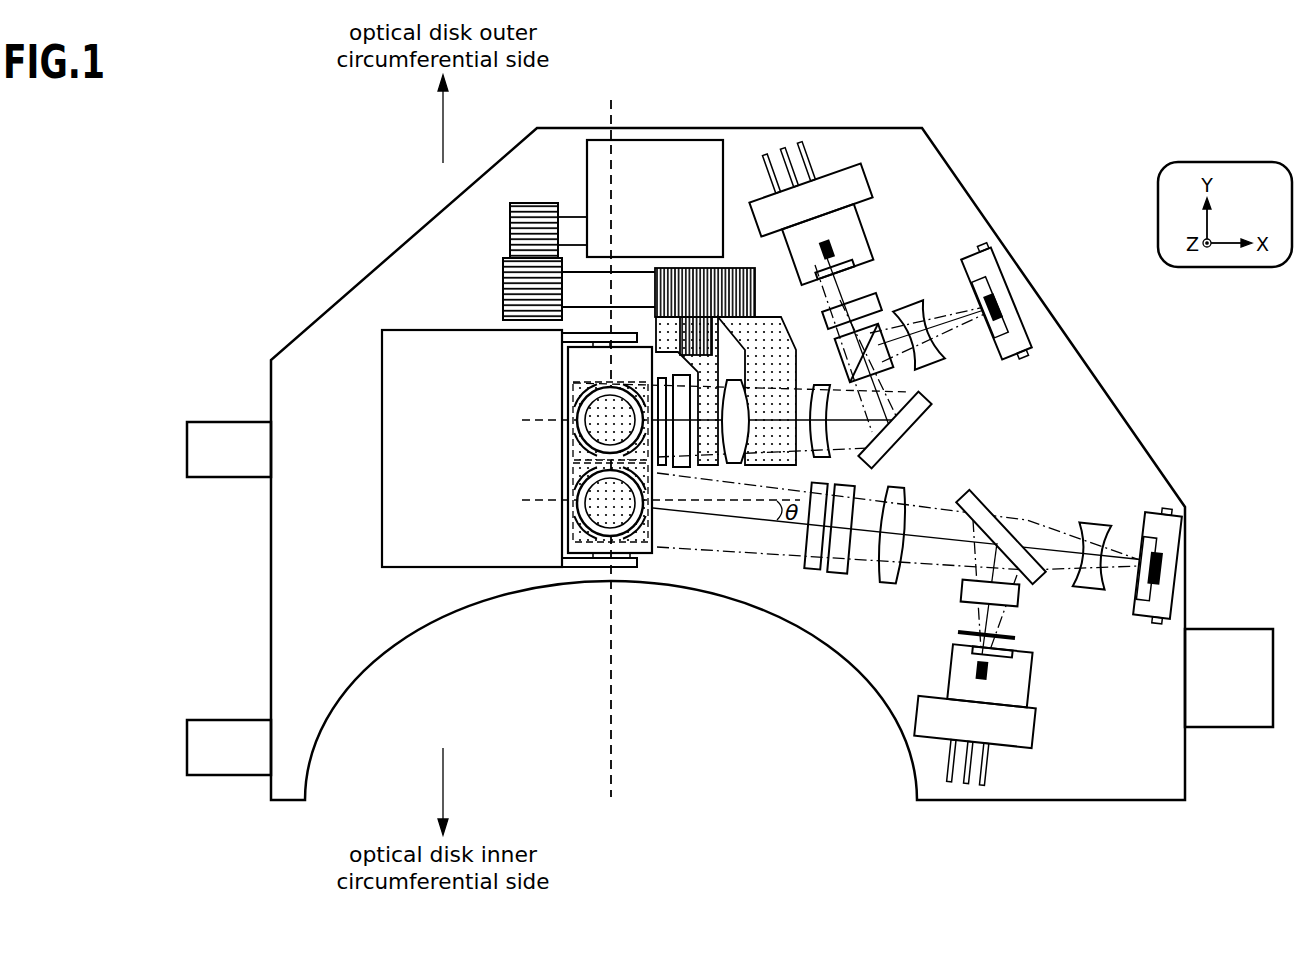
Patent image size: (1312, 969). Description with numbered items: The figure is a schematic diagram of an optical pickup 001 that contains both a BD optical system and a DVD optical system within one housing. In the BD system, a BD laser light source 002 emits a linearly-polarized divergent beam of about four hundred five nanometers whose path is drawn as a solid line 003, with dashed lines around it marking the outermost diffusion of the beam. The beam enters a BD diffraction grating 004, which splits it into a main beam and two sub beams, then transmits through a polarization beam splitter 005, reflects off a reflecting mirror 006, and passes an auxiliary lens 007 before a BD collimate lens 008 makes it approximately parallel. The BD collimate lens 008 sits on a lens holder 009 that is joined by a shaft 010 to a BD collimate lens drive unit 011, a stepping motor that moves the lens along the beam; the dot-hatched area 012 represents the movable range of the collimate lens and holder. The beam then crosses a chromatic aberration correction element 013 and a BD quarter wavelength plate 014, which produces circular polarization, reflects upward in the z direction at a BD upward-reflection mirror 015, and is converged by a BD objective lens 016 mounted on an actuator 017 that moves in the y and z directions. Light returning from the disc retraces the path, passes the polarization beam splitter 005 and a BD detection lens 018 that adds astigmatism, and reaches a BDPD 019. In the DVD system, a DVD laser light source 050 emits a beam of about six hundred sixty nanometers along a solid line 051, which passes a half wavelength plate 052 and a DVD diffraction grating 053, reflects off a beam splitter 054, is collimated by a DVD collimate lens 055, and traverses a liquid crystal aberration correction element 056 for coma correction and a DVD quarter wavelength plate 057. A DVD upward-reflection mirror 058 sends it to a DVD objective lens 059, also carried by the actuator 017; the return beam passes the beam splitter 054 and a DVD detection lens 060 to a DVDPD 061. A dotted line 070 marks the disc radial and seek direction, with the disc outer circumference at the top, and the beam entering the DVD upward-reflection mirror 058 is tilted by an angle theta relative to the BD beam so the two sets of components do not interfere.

The optical pickup 001 is at (730, 464).
The BD laser light source 002 is at (833, 209).
The solid line 003 is at (882, 275).
The BD diffraction grating 004 is at (894, 323).
The polarization beam splitter 005 is at (938, 355).
The reflecting mirror 006 is at (931, 430).
The auxiliary lens 007 is at (839, 436).
The BD collimate lens 008 is at (758, 421).
The lens holder 009 is at (726, 390).
The shaft 010 is at (540, 261).
The BD collimate lens drive unit 011 is at (655, 171).
The area hatched with dots 012 is at (735, 311).
The chromatic aberration correction element 013 is at (705, 508).
The BD quarter wavelength plate 014 is at (673, 522).
The BD upward-reflection mirror 015 is at (559, 412).
The BD objective lens 016 is at (559, 490).
The actuator 017 is at (440, 448).
The BD detection lens 018 is at (968, 349).
The BDPD 019 is at (1018, 292).
The DVD laser light source 050 is at (1004, 715).
The solid line 051 is at (960, 587).
The half wavelength plate 052 is at (1028, 647).
The DVD diffraction grating 053 is at (1029, 600).
The beam splitter 054 is at (1008, 525).
The DVD collimate lens 055 is at (890, 570).
The liquid crystal aberration correction element 056 is at (830, 563).
The DVD quarter wavelength plate 057 is at (795, 551).
The DVD upward-reflection mirror 058 is at (578, 488).
The DVD objective lens 059 is at (562, 450).
The DVD detection lens 060 is at (1101, 528).
The DVDPD 061 is at (1195, 565).
The dotted line 070 is at (655, 448).